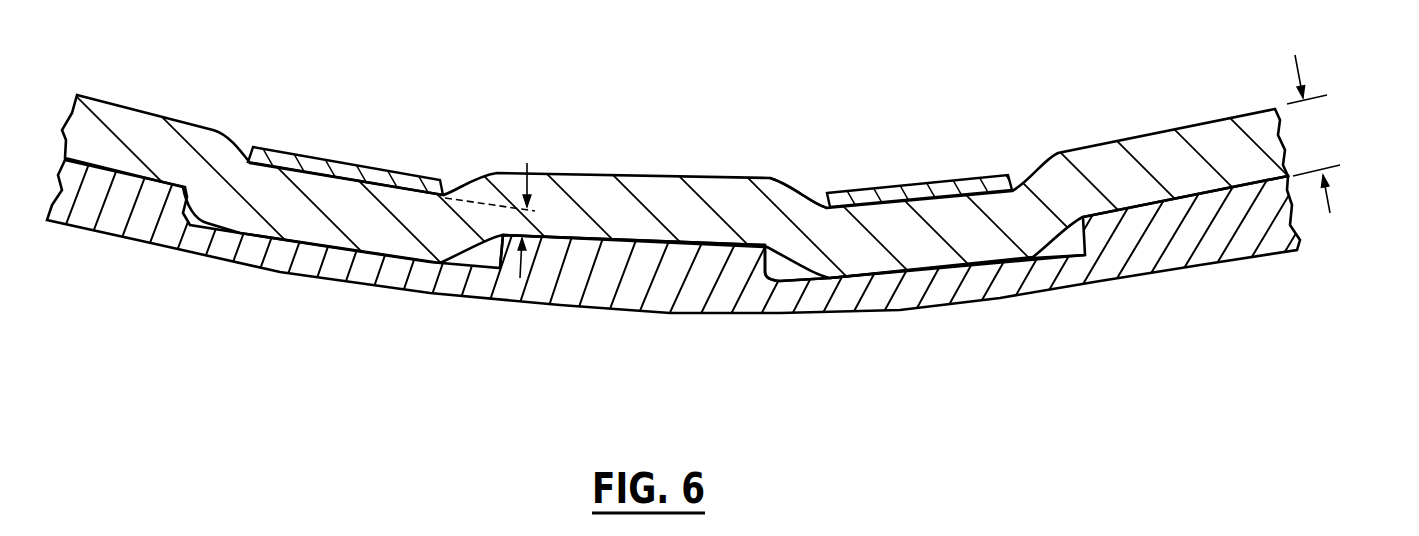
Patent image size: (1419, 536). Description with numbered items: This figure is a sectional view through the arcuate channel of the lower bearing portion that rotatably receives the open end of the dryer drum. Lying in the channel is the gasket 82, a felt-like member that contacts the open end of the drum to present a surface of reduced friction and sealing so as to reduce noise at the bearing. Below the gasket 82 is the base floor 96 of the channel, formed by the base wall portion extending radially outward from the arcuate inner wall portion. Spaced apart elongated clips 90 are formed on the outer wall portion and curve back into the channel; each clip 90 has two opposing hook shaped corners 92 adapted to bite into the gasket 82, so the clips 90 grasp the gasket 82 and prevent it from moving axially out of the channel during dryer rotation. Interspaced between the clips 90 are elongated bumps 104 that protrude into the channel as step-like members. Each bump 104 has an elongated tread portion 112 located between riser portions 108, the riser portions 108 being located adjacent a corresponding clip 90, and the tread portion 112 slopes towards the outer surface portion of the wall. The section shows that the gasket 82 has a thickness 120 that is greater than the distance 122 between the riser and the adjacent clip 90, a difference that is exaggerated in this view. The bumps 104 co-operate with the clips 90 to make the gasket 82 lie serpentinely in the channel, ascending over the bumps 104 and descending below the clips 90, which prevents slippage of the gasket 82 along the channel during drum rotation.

The gasket 82 is at (664, 200).
The elongated clips 90 is at (353, 164).
The hook shaped corners 92 is at (827, 208).
The base floor 96 is at (923, 267).
The elongated bumps 104 is at (577, 270).
The riser portions 108 is at (767, 268).
The tread portion 112 is at (657, 240).
The thickness 120 is at (1298, 66).
The distance 122 is at (530, 183).